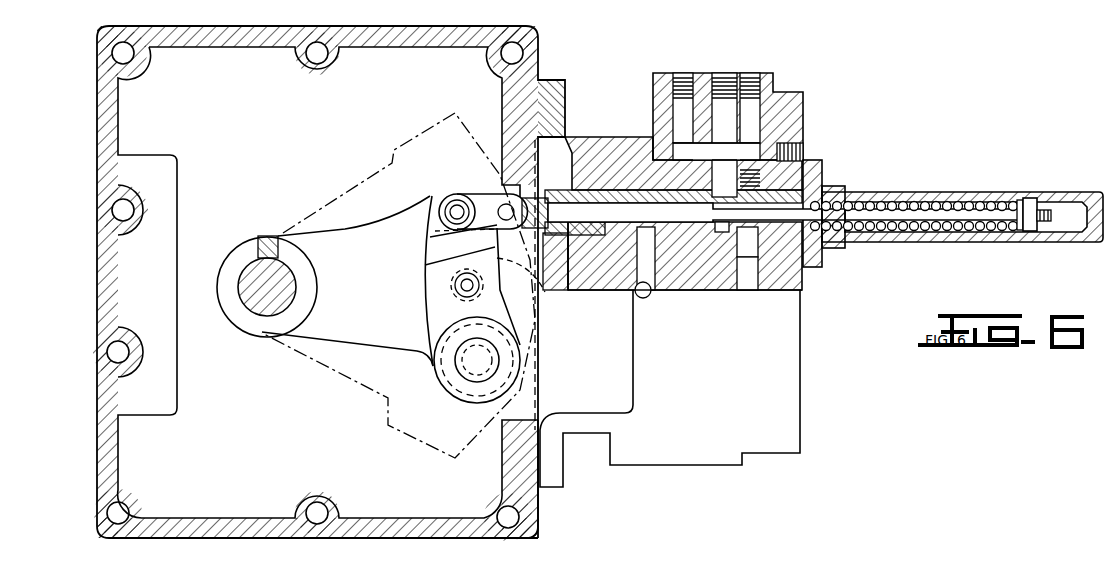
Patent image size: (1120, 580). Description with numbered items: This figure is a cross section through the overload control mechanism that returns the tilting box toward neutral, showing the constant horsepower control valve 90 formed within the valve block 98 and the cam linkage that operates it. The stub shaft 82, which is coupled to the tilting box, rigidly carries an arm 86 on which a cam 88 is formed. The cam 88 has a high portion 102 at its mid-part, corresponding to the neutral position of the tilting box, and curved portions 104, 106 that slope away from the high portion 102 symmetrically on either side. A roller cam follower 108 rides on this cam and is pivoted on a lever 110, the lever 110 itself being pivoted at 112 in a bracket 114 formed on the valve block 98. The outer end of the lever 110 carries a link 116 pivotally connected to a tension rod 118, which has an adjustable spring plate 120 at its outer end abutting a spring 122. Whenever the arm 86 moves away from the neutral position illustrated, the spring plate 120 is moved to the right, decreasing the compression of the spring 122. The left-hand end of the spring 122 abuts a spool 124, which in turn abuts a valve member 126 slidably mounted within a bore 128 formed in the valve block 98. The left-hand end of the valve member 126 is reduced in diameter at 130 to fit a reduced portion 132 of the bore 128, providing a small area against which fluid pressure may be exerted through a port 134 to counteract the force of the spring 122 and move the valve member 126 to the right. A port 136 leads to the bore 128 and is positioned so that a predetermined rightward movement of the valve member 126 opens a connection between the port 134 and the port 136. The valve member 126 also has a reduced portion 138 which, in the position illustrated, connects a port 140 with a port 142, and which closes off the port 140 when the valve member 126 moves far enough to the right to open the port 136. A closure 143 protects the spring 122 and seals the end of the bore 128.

The stub shaft 82 is at (258, 268).
The arm 86 is at (362, 259).
The cam 88 is at (521, 275).
The constant horsepower control valve 90 is at (803, 112).
The valve block 98 is at (770, 386).
The high portion 102 is at (554, 261).
The curved portion 104 is at (440, 253).
The curved portion 106 is at (452, 366).
The roller cam follower 108 is at (450, 289).
The lever 110 is at (432, 320).
The pivot 112 is at (473, 372).
The bracket 114 is at (596, 380).
The link 116 is at (470, 205).
The tension rod 118 is at (916, 213).
The adjustable spring plate 120 is at (1025, 207).
The spring 122 is at (978, 207).
The spool 124 is at (823, 193).
The valve member 126 is at (804, 160).
The bore 128 is at (720, 292).
The reduced diameter end 130 is at (646, 292).
The reduced portion of bore 132 is at (622, 290).
The port 134 is at (657, 292).
The port 136 is at (680, 190).
The reduced portion 138 is at (747, 292).
The port 140 is at (718, 196).
The port 142 is at (752, 262).
The closure 143 is at (1068, 243).